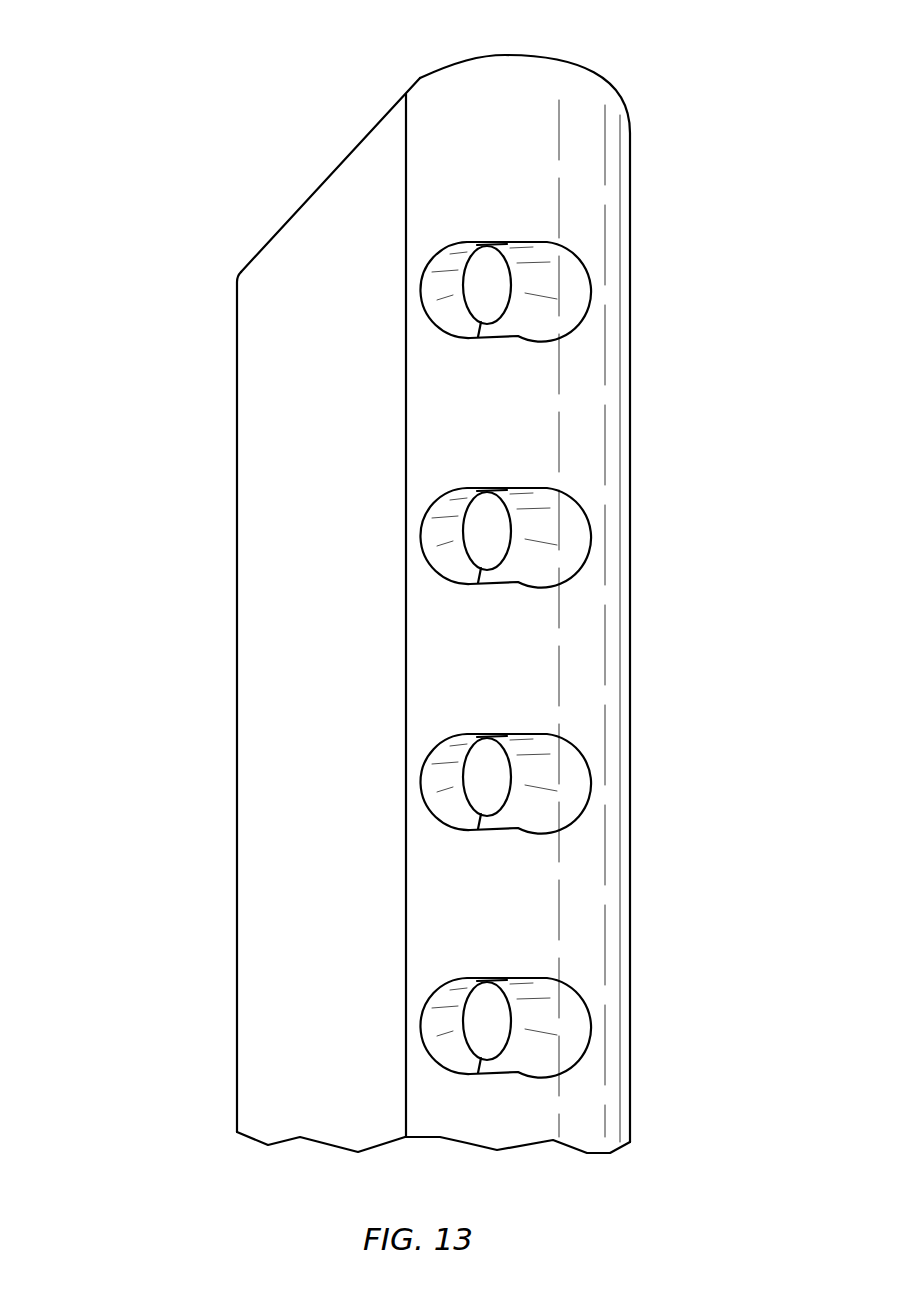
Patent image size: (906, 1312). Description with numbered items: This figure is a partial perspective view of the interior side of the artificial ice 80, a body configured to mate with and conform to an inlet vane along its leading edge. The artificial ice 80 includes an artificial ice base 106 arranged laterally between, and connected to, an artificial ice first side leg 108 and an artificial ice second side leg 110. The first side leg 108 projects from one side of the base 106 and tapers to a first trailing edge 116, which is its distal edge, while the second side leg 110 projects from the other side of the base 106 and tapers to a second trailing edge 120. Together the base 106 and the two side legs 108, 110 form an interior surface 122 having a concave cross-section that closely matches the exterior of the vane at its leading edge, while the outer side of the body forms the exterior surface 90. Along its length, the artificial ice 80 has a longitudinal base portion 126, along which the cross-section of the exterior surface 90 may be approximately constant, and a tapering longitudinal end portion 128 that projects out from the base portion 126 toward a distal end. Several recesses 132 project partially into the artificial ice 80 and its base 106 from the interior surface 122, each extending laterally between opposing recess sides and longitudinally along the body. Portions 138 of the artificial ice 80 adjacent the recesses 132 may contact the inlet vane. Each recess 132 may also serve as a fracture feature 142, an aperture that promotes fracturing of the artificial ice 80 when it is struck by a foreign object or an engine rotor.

The artificial ice 80 is at (668, 58).
The exterior surface 90 is at (283, 808).
The artificial ice base 106 is at (230, 389).
The artificial ice first side leg 108 is at (392, 148).
The artificial ice second side leg 110 is at (652, 170).
The first trailing edge 116 is at (405, 150).
The second trailing edge 120 is at (630, 178).
The interior surface 122 is at (588, 228).
The longitudinal base portion 126 is at (165, 699).
The longitudinal end portion 128 is at (255, 216).
The recess 132 is at (588, 295).
The portions of the artificial ice adjacent the recesses 138 is at (600, 323).
The fracture feature 142 is at (487, 653).